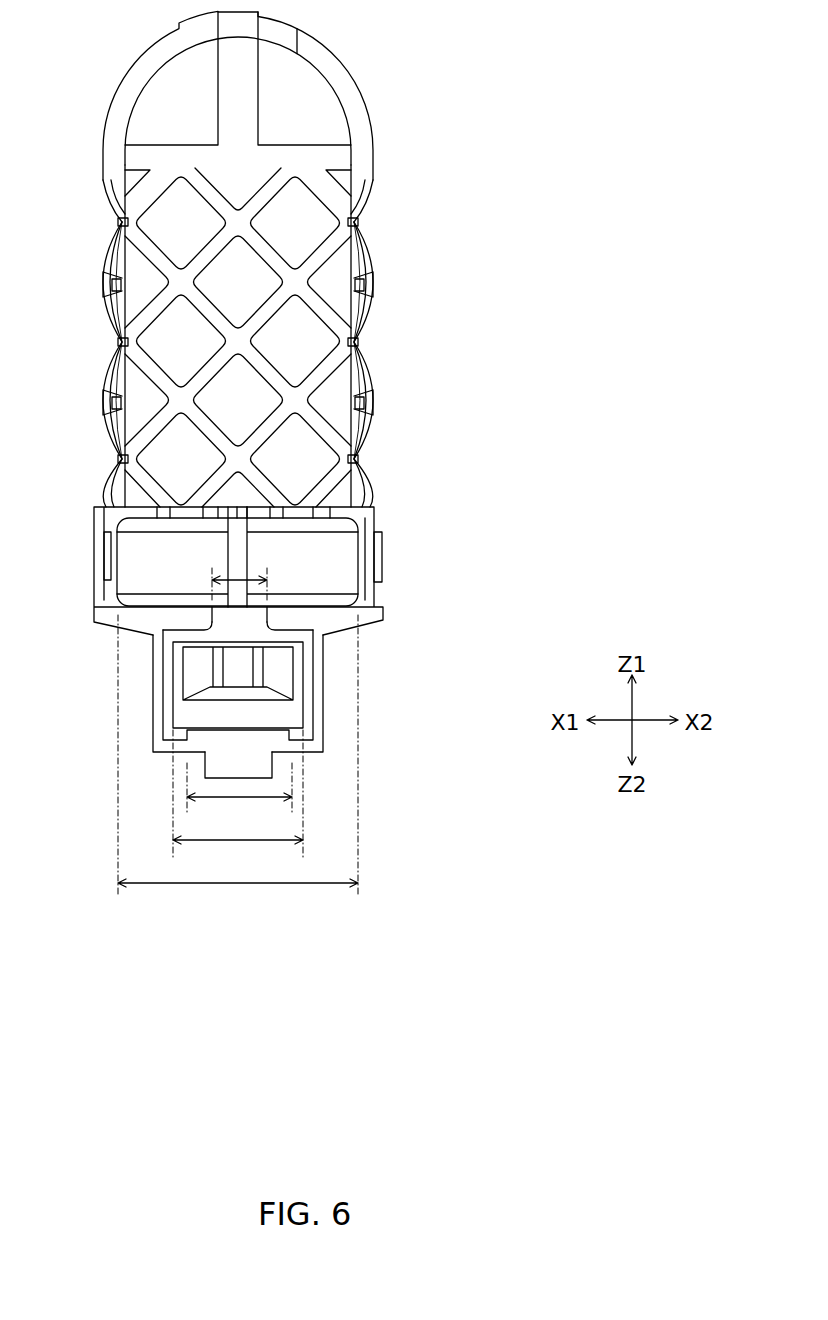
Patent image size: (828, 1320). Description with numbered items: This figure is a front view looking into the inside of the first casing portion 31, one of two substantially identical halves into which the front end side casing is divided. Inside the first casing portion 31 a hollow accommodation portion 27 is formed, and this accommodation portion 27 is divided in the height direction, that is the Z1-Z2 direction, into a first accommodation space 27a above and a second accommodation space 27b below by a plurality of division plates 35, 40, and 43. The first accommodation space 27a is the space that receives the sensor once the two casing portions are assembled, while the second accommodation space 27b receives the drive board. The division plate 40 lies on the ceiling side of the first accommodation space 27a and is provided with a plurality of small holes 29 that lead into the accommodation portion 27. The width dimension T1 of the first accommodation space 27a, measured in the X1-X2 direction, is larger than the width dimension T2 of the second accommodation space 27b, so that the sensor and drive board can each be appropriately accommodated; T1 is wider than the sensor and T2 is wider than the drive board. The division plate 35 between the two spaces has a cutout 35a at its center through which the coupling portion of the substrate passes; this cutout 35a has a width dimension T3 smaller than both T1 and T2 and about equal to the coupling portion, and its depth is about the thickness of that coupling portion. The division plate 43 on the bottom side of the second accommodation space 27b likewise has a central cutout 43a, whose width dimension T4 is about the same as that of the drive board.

The accommodation portion 27 is at (325, 617).
The first accommodation space 27a is at (333, 581).
The second accommodation space 27b is at (285, 660).
The small holes 29 is at (317, 508).
The first casing portion 31 is at (424, 529).
The division plate 35 is at (173, 618).
The cutout 35a is at (212, 632).
The division plate 40 is at (140, 508).
The division plate 43 is at (316, 742).
The cutout 43a is at (220, 740).
The width dimension T1 is at (238, 765).
The width dimension T2 is at (238, 799).
The width dimension T3 is at (242, 578).
The width dimension T4 is at (239, 791).